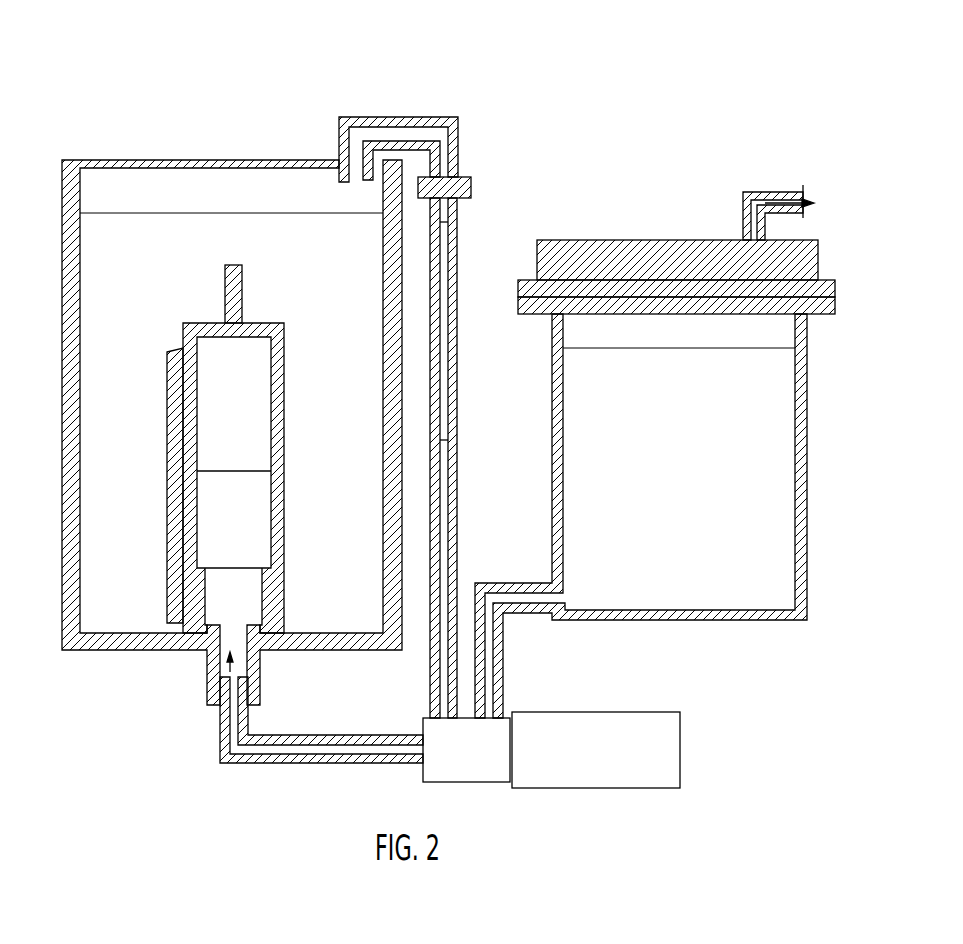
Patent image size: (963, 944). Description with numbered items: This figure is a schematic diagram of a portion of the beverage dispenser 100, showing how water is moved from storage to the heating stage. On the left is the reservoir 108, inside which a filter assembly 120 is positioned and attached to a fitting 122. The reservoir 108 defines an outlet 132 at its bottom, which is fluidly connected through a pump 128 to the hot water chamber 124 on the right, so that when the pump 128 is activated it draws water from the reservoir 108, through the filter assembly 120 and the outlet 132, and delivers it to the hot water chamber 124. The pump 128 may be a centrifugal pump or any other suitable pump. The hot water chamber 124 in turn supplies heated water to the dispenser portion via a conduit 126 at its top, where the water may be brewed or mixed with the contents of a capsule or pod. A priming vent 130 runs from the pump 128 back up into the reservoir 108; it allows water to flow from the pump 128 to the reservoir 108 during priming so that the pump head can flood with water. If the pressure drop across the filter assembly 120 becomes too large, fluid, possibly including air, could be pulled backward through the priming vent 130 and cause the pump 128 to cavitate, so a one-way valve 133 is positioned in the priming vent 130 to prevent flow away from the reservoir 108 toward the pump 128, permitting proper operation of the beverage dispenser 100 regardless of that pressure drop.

The beverage dispenser 100 is at (126, 84).
The reservoir 108 is at (97, 349).
The filter assembly 120 is at (175, 495).
The fitting 122 is at (198, 617).
The hot water chamber 124 is at (778, 432).
The conduit 126 is at (772, 192).
The pump 128 is at (605, 720).
The priming vent 130 is at (457, 272).
The outlet 132 is at (222, 666).
The one-way valve 133 is at (463, 178).